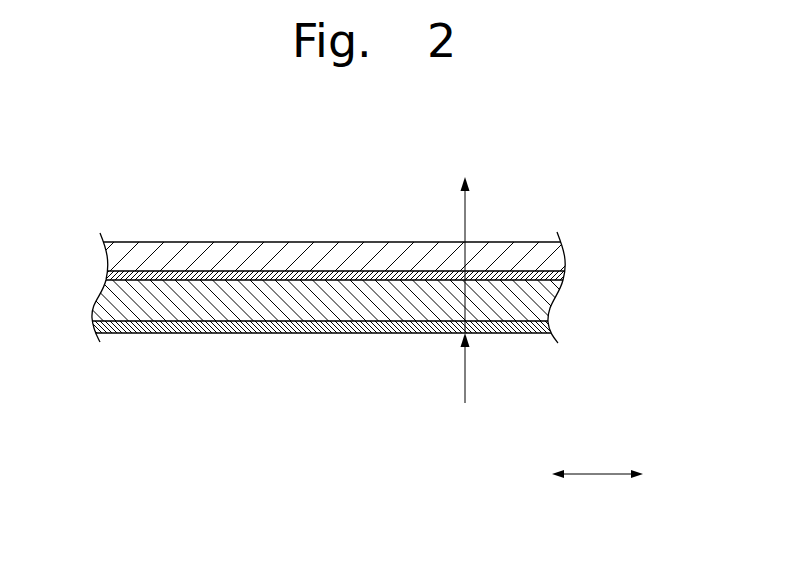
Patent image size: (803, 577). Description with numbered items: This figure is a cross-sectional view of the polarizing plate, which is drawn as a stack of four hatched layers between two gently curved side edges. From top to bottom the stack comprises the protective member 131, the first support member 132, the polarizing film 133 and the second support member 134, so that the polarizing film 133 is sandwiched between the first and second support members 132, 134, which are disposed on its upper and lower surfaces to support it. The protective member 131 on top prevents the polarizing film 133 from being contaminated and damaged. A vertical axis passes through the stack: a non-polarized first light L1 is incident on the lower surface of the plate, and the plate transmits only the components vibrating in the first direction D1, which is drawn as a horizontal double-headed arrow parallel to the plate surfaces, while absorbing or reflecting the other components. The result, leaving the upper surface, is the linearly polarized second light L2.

The protective member 131 is at (553, 255).
The first support member 132 is at (562, 274).
The polarizing film 133 is at (540, 304).
The second support member 134 is at (543, 323).
The first light L1 is at (465, 375).
The second light L2 is at (465, 207).
The first direction D1 is at (614, 475).